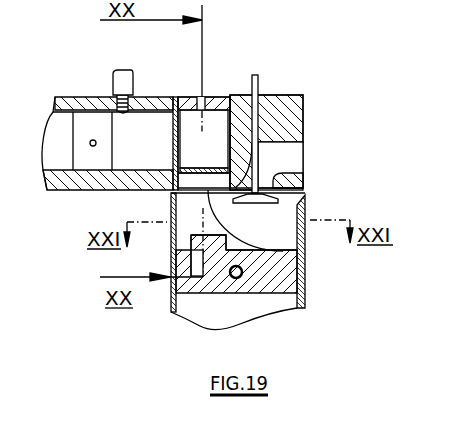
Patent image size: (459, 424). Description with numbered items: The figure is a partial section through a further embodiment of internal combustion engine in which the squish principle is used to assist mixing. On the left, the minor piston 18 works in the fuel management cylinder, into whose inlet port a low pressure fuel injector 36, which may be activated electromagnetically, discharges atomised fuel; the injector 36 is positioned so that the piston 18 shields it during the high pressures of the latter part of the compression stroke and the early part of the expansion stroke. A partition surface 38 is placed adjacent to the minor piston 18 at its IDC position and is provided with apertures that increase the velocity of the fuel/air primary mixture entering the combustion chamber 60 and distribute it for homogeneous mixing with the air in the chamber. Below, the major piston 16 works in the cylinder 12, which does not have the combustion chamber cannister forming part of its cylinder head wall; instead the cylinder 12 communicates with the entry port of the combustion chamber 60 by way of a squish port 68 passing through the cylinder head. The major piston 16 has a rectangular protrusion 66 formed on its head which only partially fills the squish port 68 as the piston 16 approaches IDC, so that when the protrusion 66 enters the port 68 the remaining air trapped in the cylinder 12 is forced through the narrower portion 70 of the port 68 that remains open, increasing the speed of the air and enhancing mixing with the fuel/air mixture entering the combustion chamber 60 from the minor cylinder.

The cylinder 12 is at (283, 213).
The major piston 16 is at (282, 280).
The minor piston 18 is at (90, 130).
The fuel injector 36 is at (120, 88).
The partition surface 38 is at (172, 95).
The combustion chamber 60 is at (192, 133).
The rectangular protrusion 66 is at (200, 240).
The squish port 68 is at (297, 252).
The narrower portion 70 is at (188, 177).